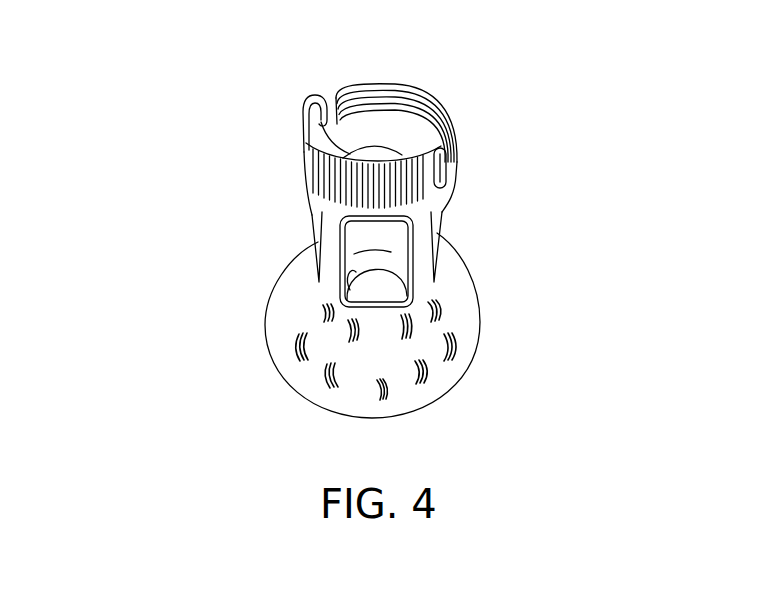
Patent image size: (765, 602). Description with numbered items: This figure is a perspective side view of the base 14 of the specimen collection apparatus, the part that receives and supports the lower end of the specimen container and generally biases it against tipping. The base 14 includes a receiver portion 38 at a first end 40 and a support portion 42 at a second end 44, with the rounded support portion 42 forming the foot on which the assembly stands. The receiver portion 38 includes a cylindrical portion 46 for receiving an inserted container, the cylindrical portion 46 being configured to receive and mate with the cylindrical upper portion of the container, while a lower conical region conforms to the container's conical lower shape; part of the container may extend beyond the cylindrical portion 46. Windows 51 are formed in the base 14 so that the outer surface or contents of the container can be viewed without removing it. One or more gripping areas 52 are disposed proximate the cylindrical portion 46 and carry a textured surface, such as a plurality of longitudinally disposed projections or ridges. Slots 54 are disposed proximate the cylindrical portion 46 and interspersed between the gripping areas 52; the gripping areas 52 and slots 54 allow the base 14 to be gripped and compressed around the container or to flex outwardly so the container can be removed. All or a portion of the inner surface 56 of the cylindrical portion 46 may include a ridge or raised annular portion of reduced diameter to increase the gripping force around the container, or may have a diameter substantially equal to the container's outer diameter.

The base 14 is at (142, 207).
The receiver portion 38 is at (555, 171).
The first end 40 is at (559, 50).
The support portion 42 is at (570, 305).
The second end 44 is at (529, 410).
The cylindrical portion 46 is at (437, 231).
The window 51 is at (345, 297).
The gripping area 52 is at (308, 168).
The slot 54 is at (447, 163).
The inner surface 56 is at (365, 97).